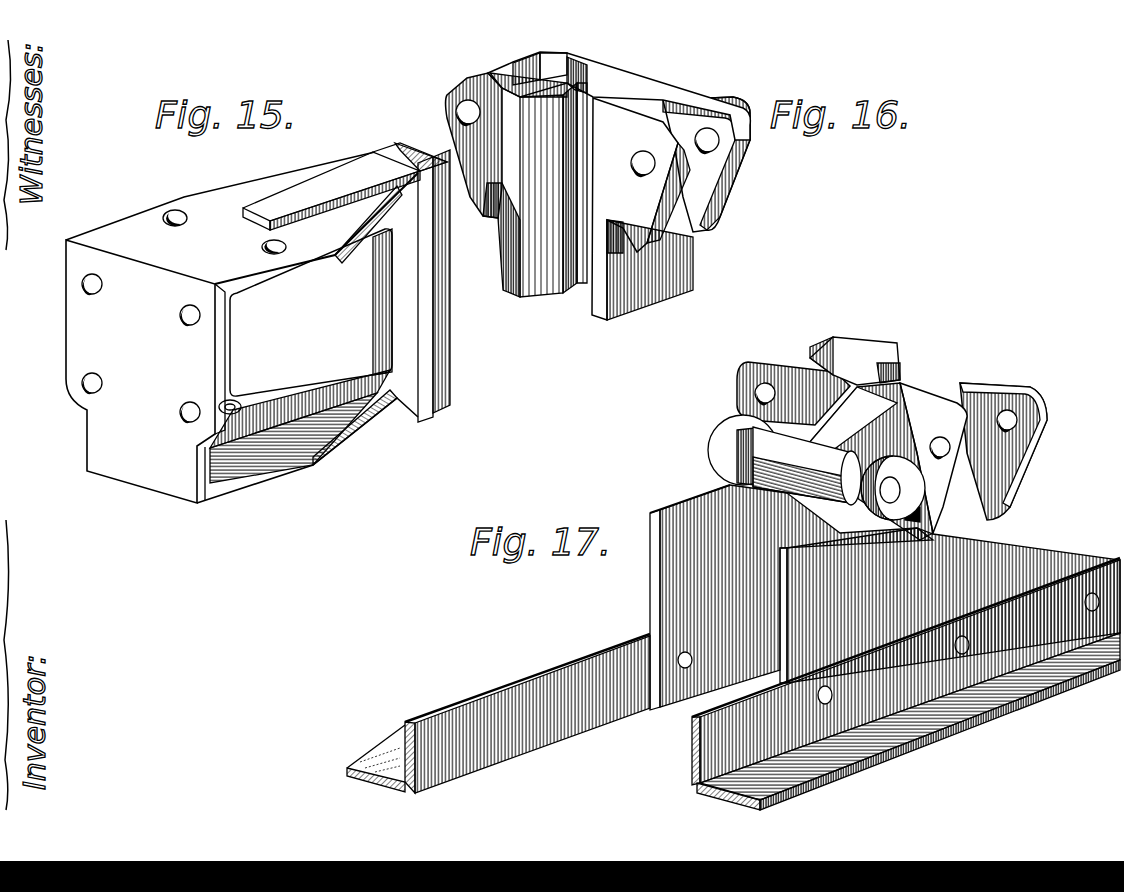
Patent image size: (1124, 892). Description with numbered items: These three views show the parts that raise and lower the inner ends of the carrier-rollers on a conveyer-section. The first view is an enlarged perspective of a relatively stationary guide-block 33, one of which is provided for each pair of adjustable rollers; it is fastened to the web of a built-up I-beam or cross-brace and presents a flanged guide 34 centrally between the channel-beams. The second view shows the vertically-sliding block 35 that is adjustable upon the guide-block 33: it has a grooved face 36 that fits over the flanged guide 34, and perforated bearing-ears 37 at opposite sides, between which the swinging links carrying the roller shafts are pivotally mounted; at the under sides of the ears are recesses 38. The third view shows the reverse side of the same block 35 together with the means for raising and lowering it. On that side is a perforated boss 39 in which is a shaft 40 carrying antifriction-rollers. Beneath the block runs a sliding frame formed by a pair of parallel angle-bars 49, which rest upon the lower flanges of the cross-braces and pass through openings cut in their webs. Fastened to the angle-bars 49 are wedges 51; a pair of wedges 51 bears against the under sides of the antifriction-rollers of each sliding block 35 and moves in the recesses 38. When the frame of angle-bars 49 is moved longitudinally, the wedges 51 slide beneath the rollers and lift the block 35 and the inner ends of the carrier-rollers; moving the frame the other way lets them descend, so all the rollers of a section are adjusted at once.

In FIG. 15, the guide-block 33 is at (82, 338).
In FIG. 15, the flanged guide 34 is at (384, 148).
In FIG. 16, the vertically-sliding block 35 is at (663, 87).
In FIG. 17, the vertically-sliding block 35 is at (963, 372).
In FIG. 16, the grooved face 36 is at (587, 93).
In FIG. 17, the grooved face 36 is at (903, 370).
In FIG. 16, the perforated bearing-ears 37 is at (683, 170).
In FIG. 17, the perforated bearing-ears 37 is at (822, 343).
In FIG. 16, the recesses 38 is at (487, 182).
In FIG. 17, the perforated boss 39 is at (713, 470).
In FIG. 17, the shaft 40 is at (890, 488).
In FIG. 17, the angle-bars 49 is at (693, 745).
In FIG. 17, the wedges 51 is at (668, 582).